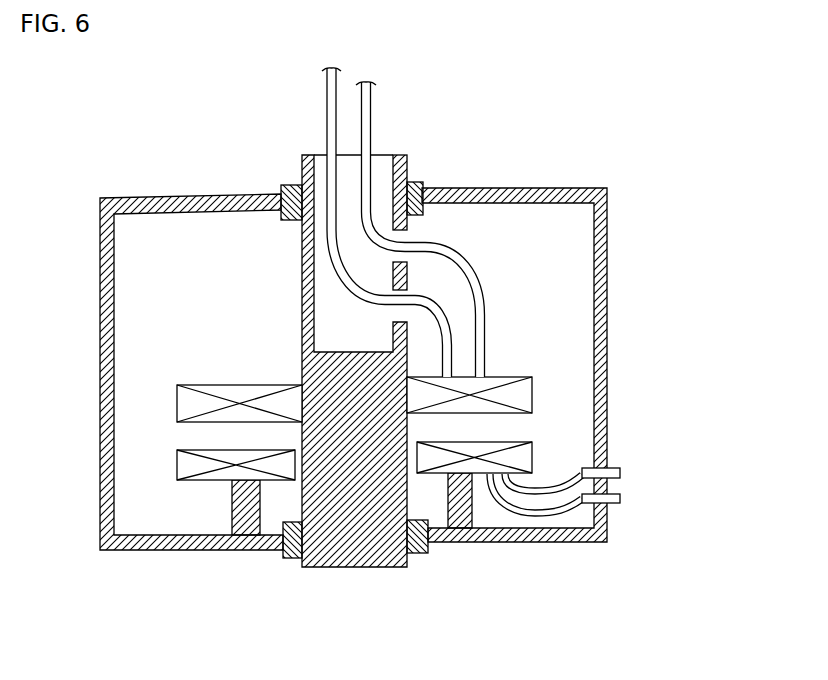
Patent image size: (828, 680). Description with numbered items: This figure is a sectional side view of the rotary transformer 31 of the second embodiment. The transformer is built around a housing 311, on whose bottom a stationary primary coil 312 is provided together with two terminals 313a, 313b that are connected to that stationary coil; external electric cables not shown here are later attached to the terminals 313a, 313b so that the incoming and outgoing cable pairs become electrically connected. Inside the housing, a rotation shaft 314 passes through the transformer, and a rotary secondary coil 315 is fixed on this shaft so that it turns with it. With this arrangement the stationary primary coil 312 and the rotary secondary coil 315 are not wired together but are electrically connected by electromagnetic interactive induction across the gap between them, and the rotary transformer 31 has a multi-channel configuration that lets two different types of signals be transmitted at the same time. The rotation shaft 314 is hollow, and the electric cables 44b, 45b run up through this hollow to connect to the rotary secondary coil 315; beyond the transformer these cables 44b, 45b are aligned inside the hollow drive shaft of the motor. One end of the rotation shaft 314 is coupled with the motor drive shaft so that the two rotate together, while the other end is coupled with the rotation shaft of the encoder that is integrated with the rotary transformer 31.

The rotary transformer 31 is at (190, 99).
The housing 311 is at (200, 552).
The stationary primary coil 312 is at (270, 483).
The terminal 313a is at (620, 470).
The terminal 313b is at (621, 503).
The rotation shaft 314 is at (407, 165).
The rotary secondary coil 315 is at (517, 402).
The electric cable 44b is at (337, 86).
The electric cable 45b is at (372, 108).